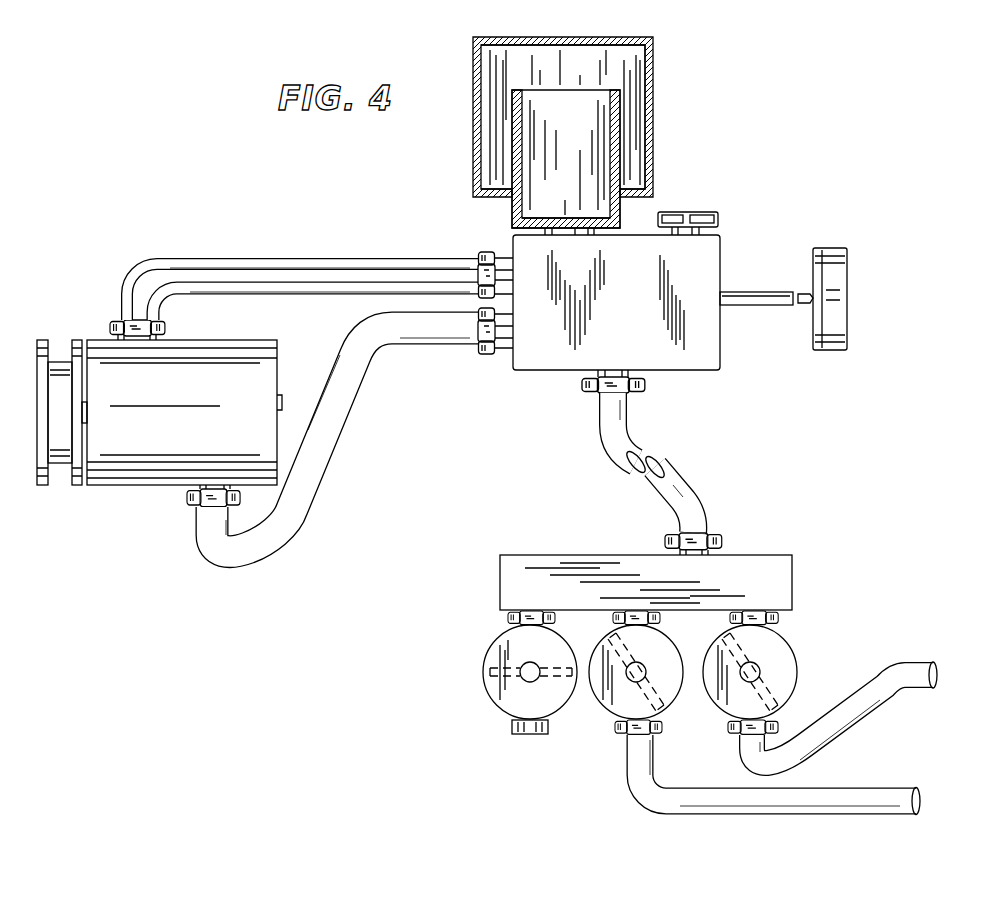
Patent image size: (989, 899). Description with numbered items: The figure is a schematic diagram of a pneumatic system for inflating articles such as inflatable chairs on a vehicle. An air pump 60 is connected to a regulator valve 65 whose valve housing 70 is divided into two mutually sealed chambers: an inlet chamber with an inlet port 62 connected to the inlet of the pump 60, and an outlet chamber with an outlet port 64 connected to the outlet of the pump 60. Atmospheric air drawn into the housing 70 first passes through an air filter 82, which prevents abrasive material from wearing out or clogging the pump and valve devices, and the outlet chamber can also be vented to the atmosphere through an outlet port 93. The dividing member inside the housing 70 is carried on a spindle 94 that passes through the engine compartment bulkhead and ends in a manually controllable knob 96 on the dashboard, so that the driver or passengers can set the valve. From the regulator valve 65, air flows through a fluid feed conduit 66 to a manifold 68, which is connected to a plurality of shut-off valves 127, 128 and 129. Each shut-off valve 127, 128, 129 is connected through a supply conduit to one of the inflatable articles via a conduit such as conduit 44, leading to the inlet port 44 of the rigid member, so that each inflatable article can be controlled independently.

The inlet port 44 is at (887, 661).
The air pump 60 is at (190, 409).
The inlet port 62 is at (468, 340).
The outlet port 64 is at (455, 258).
The regulator valve 65 is at (684, 193).
The fluid feed conduit 66 is at (698, 494).
The manifold 68 is at (505, 578).
The valve housing 70 is at (536, 367).
The air filter 82 is at (476, 49).
The outlet port 93 is at (720, 220).
The spindle 94 is at (777, 294).
The manually controllable knob 96 is at (838, 239).
The shut-off valve 127 is at (794, 653).
The shut-off valve 128 is at (608, 705).
The shut-off valve 129 is at (494, 697).